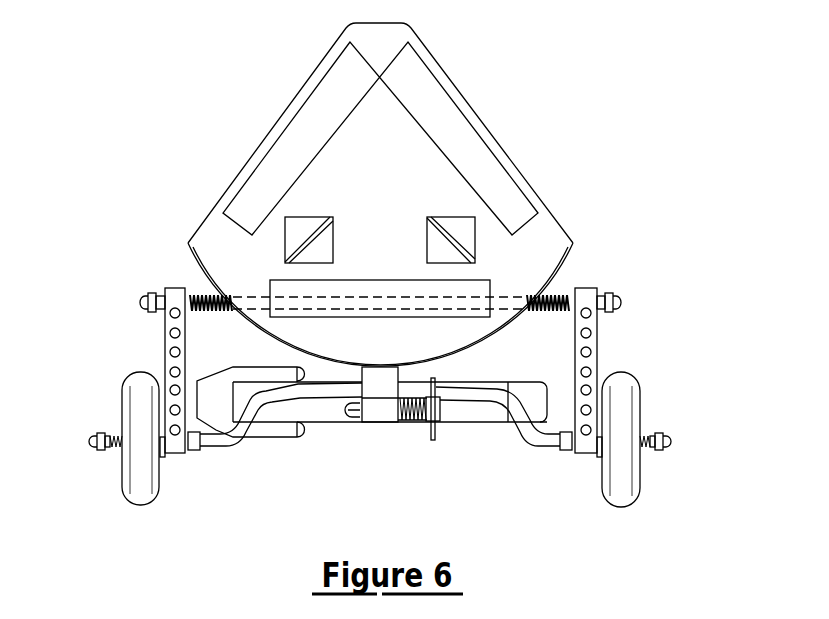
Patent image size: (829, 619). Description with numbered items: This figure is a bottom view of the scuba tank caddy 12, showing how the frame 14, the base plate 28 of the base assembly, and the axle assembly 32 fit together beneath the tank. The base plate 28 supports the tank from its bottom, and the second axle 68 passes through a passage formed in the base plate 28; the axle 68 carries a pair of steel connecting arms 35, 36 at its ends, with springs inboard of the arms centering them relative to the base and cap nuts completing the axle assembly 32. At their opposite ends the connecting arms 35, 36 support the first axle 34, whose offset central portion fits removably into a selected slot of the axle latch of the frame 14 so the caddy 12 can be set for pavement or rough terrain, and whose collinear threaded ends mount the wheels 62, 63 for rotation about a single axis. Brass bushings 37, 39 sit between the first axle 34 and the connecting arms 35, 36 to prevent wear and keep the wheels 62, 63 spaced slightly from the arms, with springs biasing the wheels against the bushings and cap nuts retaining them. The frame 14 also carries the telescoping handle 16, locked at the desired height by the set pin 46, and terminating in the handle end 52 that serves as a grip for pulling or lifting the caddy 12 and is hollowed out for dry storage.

The caddy 12 is at (585, 200).
The base plate 28 is at (443, 178).
The second axle 68 is at (373, 297).
The axle assembly 32 is at (127, 280).
The connecting arm 35 is at (167, 360).
The connecting arm 36 is at (588, 342).
The frame 14 is at (383, 380).
The handle end 52 is at (332, 406).
The handle 16 is at (262, 445).
The first axle 34 is at (493, 400).
The set pin 46 is at (442, 427).
The brass bushing 37 is at (162, 452).
The brass bushing 39 is at (598, 456).
The wheel 62 is at (143, 490).
The wheel 63 is at (620, 407).